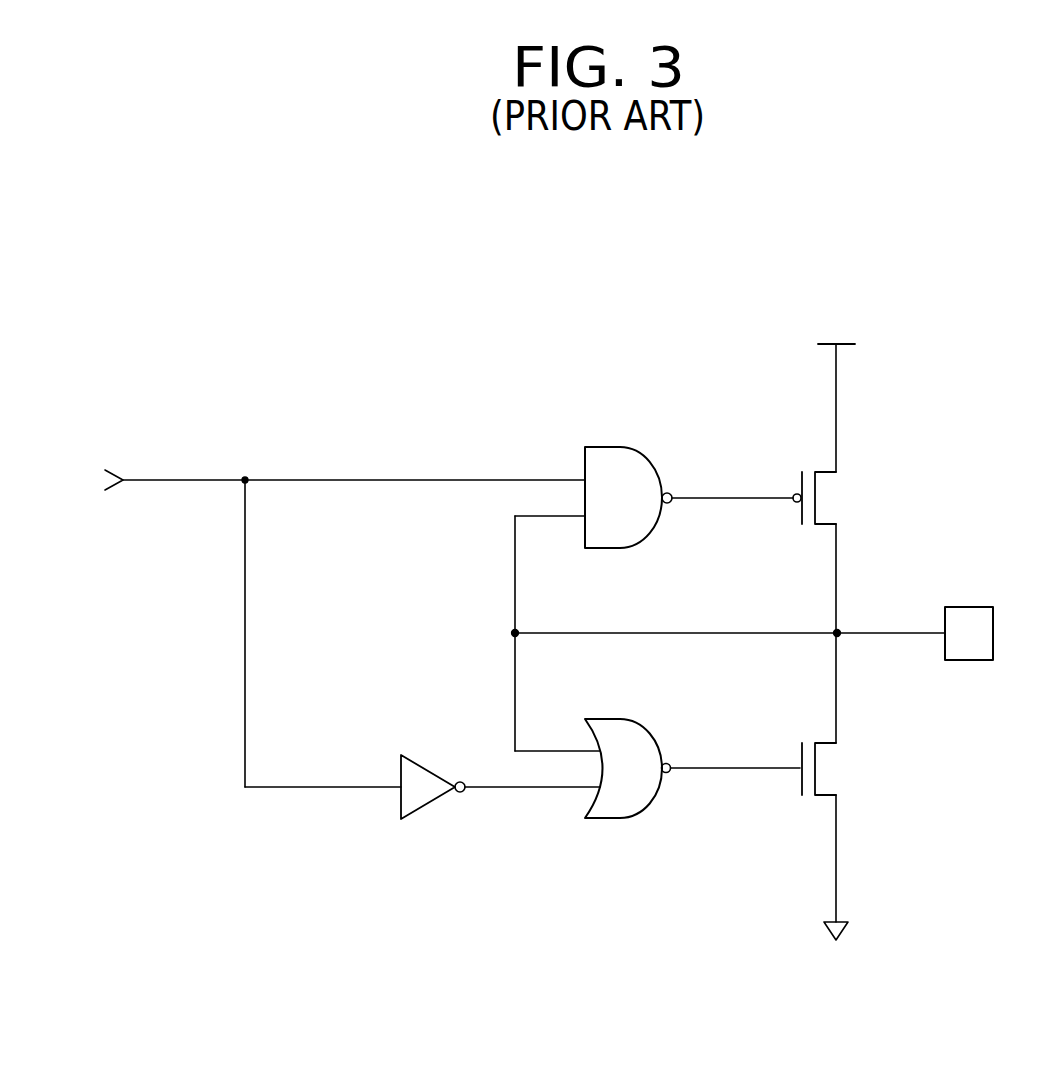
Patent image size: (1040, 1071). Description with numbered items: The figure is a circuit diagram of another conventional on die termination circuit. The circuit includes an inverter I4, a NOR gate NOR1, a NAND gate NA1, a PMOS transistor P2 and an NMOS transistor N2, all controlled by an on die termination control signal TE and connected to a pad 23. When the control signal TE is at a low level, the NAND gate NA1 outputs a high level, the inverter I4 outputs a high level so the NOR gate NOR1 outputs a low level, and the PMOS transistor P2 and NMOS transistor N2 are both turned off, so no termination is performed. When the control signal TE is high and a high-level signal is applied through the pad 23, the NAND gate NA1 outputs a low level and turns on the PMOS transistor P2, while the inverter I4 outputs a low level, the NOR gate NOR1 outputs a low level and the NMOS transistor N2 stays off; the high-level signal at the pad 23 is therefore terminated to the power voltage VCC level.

The pad 23 is at (968, 607).
The NAND gate NA1 is at (652, 463).
The NOR gate NOR1 is at (650, 735).
The inverter I4 is at (429, 768).
The PMOS transistor P2 is at (824, 607).
The NMOS transistor N2 is at (827, 841).
The on die termination control signal TE is at (321, 625).
The power voltage VCC is at (837, 391).